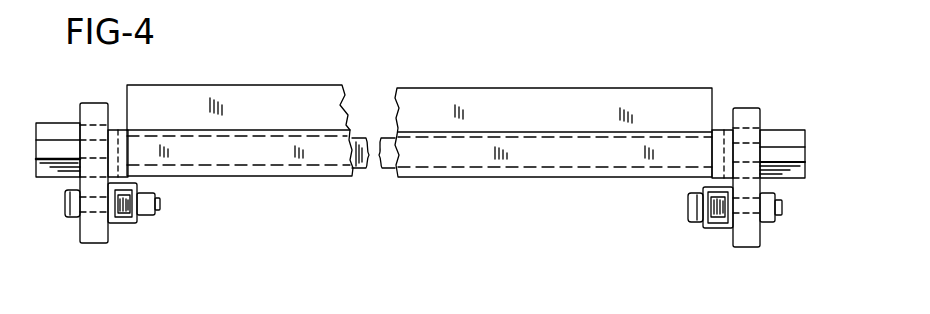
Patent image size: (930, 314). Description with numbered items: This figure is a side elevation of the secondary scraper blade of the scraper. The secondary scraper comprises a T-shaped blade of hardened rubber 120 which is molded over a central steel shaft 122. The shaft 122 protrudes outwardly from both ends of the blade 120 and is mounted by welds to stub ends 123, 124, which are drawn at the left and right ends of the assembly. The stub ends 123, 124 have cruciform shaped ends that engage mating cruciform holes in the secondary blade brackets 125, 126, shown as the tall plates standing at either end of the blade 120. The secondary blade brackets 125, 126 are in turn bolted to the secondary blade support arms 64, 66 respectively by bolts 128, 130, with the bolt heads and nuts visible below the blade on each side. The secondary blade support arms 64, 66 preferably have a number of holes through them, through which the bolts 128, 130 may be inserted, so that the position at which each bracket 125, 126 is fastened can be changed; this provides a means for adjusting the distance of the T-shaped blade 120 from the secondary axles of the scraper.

The T-shaped blade of hardened rubber 120 is at (568, 63).
The central steel shaft 122 is at (155, 134).
The stub end 123 is at (60, 127).
The stub end 124 is at (785, 131).
The secondary blade bracket 125 is at (98, 231).
The secondary blade bracket 126 is at (742, 110).
The bolt 128 is at (77, 220).
The bolt 130 is at (770, 224).
The secondary blade support arm 64 is at (125, 226).
The secondary blade support arm 66 is at (717, 228).